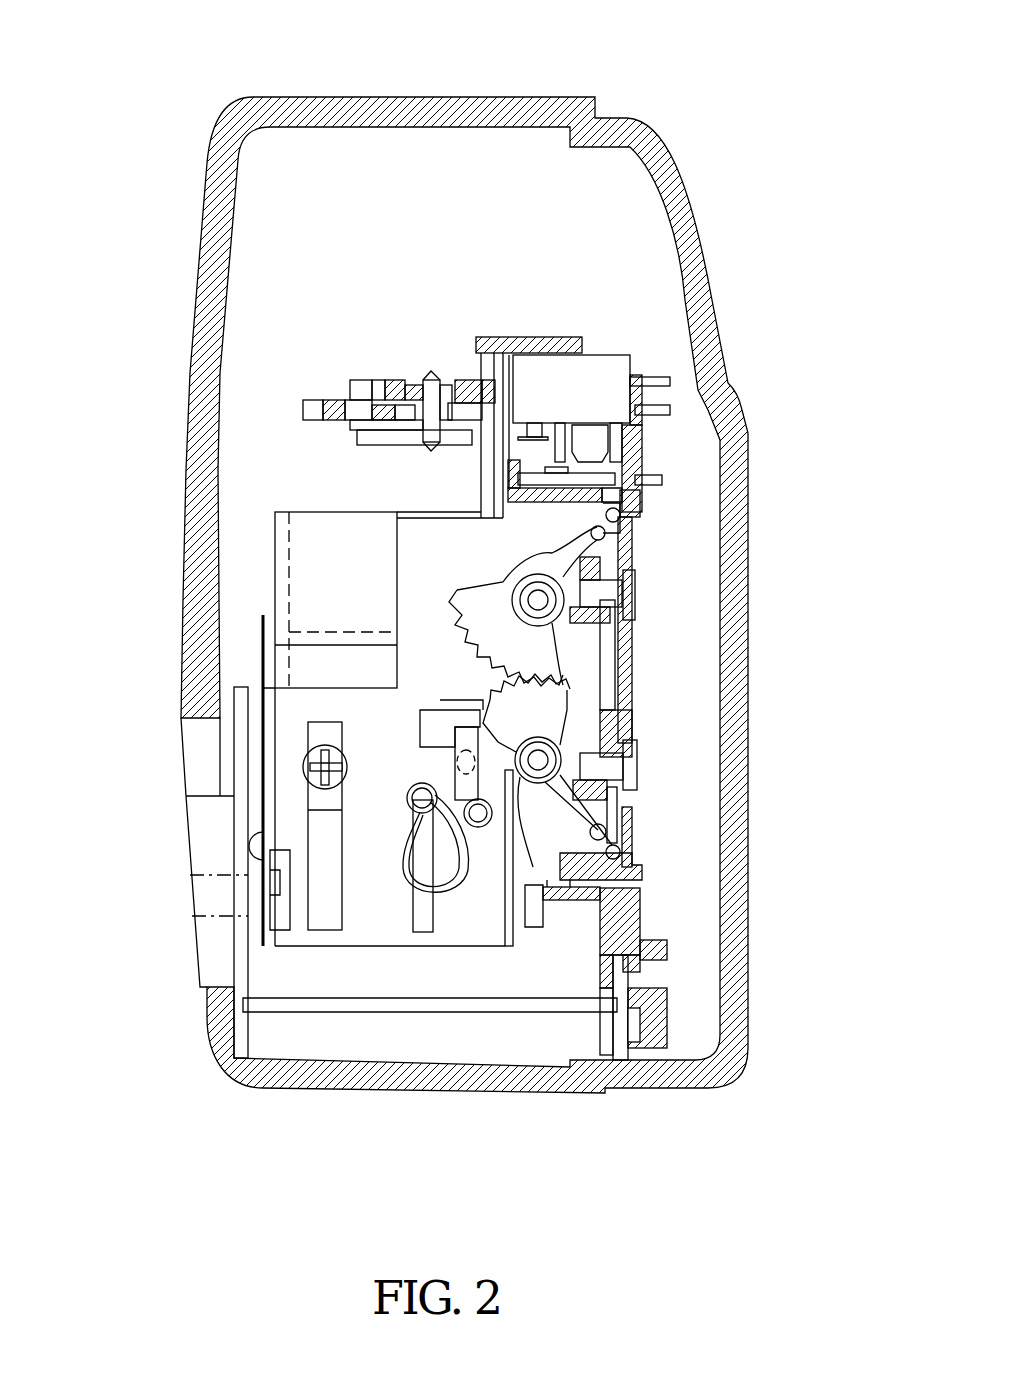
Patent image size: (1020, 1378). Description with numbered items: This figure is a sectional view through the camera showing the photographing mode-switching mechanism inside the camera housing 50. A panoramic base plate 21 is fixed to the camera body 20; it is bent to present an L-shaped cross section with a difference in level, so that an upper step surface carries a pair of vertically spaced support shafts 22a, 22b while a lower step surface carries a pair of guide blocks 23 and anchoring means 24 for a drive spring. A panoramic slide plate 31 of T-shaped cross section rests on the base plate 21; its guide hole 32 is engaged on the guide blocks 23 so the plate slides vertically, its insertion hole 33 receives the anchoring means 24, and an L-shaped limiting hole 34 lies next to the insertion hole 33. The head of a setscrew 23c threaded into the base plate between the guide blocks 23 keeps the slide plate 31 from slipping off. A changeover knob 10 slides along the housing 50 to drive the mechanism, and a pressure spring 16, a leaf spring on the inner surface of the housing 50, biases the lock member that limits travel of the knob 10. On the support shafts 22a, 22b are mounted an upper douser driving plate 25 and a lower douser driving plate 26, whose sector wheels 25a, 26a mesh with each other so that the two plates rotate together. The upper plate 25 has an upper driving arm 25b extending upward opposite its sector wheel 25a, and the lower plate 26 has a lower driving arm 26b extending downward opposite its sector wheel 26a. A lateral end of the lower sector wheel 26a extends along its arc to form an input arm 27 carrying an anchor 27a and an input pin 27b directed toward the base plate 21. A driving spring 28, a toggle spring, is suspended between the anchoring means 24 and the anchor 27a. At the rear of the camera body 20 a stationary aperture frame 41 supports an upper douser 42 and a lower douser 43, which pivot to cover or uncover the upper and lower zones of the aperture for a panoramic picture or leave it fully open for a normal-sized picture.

The camera housing 50 is at (468, 97).
The changeover knob 10 is at (205, 854).
The pressure spring 16 is at (262, 640).
The panoramic base plate 21 is at (300, 512).
The support shaft 22a is at (505, 592).
The support shaft 22b is at (640, 887).
The guide blocks 23 is at (322, 735).
The setscrew 23c is at (300, 772).
The anchoring means 24 is at (405, 800).
The upper douser driving plate 25 is at (540, 650).
The sector wheel 25a is at (462, 620).
The upper driving arm 25b is at (620, 540).
The lower douser driving plate 26 is at (540, 703).
The sector wheel 26a is at (490, 690).
The lower driving arm 26b is at (600, 773).
The input arm 27 is at (447, 780).
The anchor 27a is at (515, 885).
The input pin 27b is at (480, 735).
The driving spring 28 is at (458, 890).
The panoramic slide plate 31 is at (375, 946).
The guide hole 32 is at (330, 930).
The insertion hole 33 is at (428, 946).
The limiting hole 34 is at (448, 745).
The aperture frame 41 is at (632, 660).
The upper douser 42 is at (630, 565).
The lower douser 43 is at (612, 812).
The camera body 20 is at (588, 932).